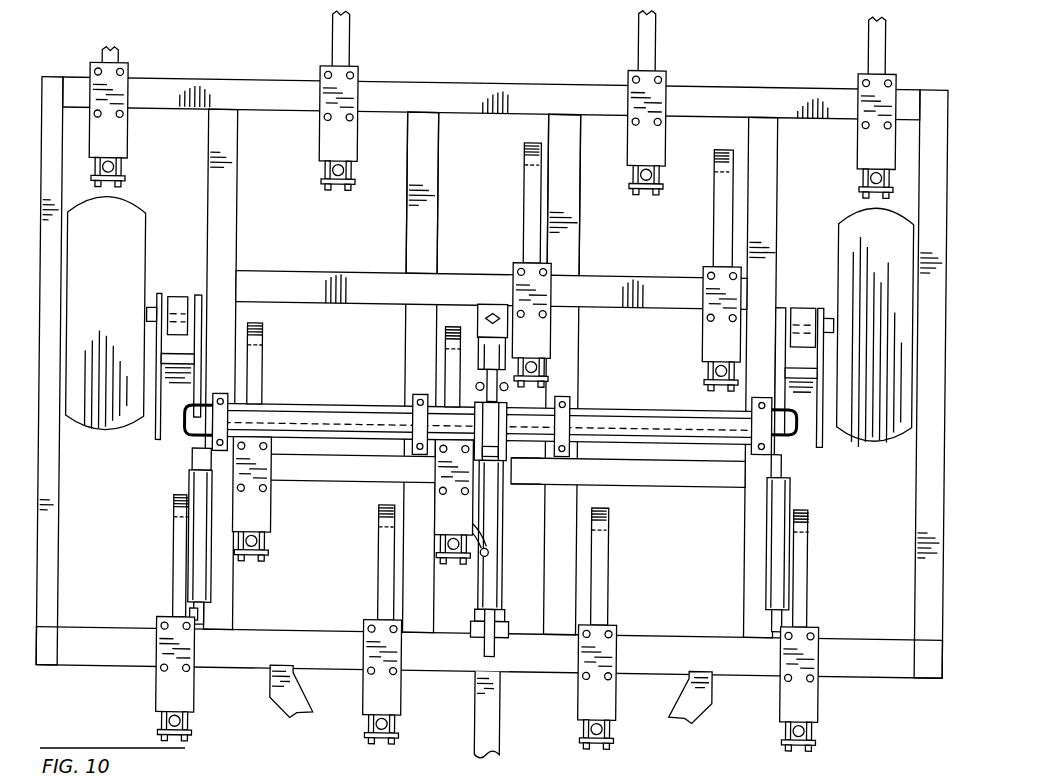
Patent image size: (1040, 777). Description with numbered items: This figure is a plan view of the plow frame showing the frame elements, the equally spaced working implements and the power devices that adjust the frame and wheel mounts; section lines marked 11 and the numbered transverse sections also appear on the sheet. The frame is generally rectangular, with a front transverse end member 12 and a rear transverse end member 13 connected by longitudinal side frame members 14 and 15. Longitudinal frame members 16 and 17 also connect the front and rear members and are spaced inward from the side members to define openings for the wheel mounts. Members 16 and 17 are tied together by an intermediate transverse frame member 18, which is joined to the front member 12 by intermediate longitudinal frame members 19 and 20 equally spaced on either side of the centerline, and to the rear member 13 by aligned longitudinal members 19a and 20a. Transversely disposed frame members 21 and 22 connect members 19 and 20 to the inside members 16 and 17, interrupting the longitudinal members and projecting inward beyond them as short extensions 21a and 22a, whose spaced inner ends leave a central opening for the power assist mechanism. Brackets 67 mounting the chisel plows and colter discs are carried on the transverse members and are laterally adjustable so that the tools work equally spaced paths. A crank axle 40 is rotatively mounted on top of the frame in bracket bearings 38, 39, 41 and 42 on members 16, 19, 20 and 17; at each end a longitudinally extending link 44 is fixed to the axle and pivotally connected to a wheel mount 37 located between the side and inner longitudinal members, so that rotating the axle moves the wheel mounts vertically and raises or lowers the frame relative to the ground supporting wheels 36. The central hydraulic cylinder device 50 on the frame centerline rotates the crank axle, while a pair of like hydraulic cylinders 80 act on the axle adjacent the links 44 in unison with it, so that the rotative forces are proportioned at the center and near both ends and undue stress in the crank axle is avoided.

The section line 11- 11 is at (42, 68).
The front transverse end frame member 12 is at (240, 262).
The rear transverse end frame member 13 is at (600, 77).
The longitudinal side frame member 14 is at (55, 545).
The longitudinal side frame member 15 is at (922, 503).
The longitudinal frame member 16 is at (209, 192).
The longitudinal frame member 17 is at (767, 232).
The intermediate transverse frame member 18 is at (318, 283).
The intermediate longitudinal frame member 19 is at (410, 352).
The longitudinally extending frame member 19a is at (408, 230).
The intermediate longitudinal frame member 20 is at (582, 362).
The longitudinally extending frame member 20a is at (582, 249).
The transversely disposed frame member 21 is at (350, 478).
The inward projection of transverse frame member 21a is at (470, 478).
The transversely disposed frame member 22 is at (703, 478).
The inward projection of transverse frame member 22a is at (515, 471).
The ground supporting wheel 36 is at (127, 433).
The wheel mount 37 is at (181, 303).
The bracket bearing 38 is at (231, 420).
The bracket bearing 39 is at (416, 418).
The crank axle 40 is at (675, 414).
The bracket bearing 41 is at (573, 420).
The bracket bearing 42 is at (755, 420).
The longitudinally extending link 44 is at (157, 352).
The hydraulic cylinder device 50 is at (497, 510).
The bracket 67 is at (128, 122).
The hydraulic cylinder 80 is at (216, 522).